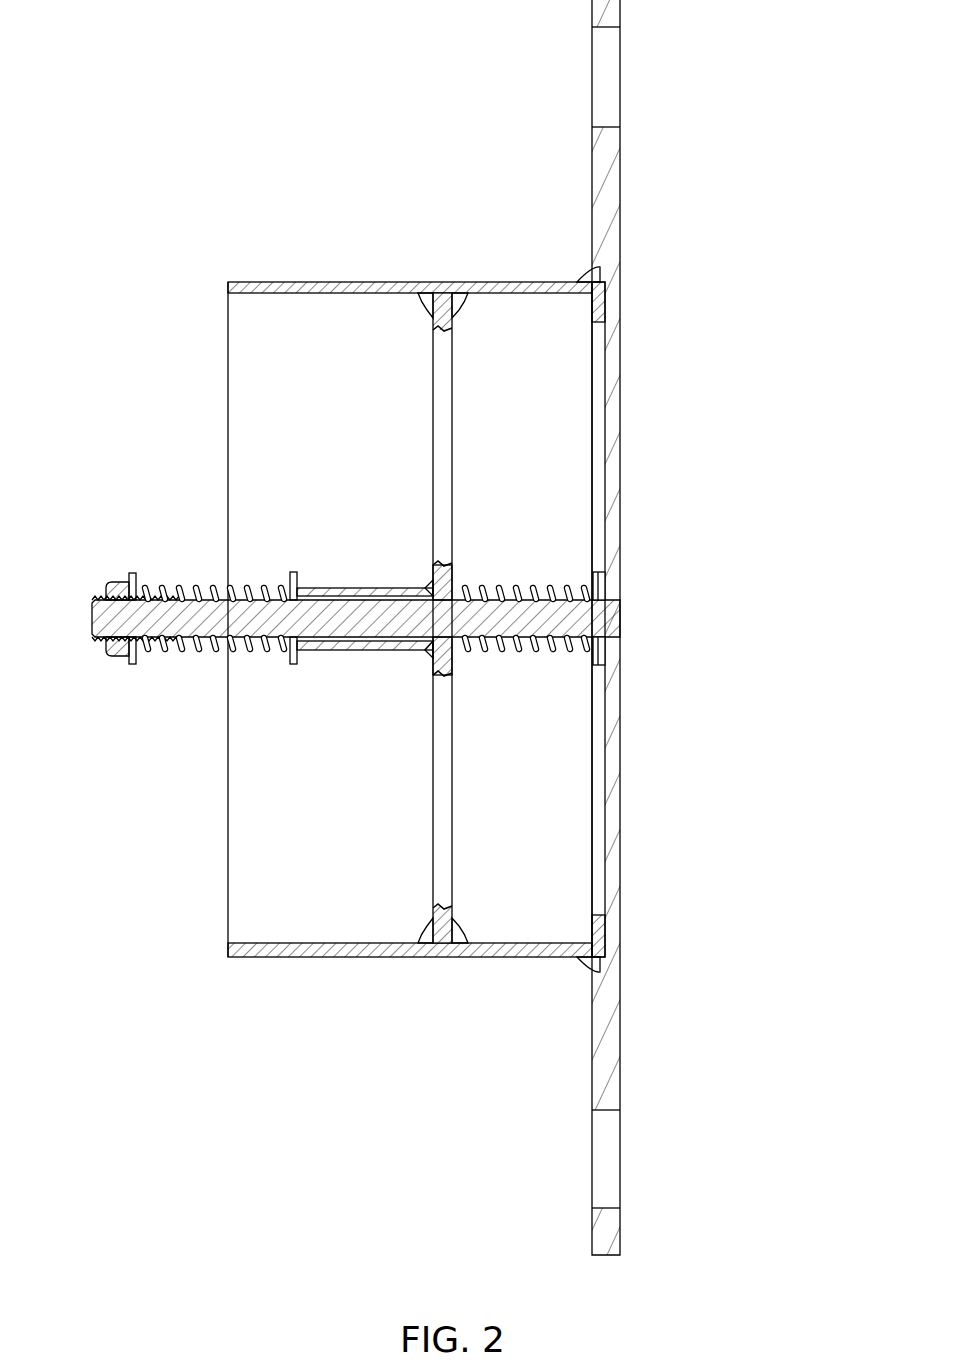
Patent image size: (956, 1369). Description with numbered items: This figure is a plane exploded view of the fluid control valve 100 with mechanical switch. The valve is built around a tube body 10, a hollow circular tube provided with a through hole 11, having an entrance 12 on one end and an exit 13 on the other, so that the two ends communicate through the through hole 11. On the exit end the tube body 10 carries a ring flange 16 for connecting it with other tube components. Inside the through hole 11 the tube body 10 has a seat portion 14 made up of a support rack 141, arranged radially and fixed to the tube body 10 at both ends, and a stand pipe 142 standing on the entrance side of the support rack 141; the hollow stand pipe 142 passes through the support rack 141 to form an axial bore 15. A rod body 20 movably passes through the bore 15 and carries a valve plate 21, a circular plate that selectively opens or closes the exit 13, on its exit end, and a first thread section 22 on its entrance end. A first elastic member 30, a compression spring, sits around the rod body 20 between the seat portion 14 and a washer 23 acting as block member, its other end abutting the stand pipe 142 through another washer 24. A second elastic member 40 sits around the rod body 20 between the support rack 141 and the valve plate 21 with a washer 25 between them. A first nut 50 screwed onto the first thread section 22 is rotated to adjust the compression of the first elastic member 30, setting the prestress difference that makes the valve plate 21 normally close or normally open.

The fluid control valve 100 is at (200, 129).
The tube body 10 is at (424, 582).
The through hole 11 is at (316, 310).
The entrance 12 is at (228, 383).
The exit 13 is at (597, 362).
The seat portion 14 is at (286, 618).
The support rack 141 is at (440, 773).
The stand pipe 142 is at (323, 643).
The bore 15 is at (382, 650).
The ring flange 16 is at (610, 1012).
The rod body 20 is at (343, 612).
The valve plate 21 is at (652, 627).
The first thread section 22 is at (102, 598).
The washer 23 is at (133, 574).
The washer 24 is at (293, 572).
The washer 25 is at (600, 648).
The first elastic member 30 is at (181, 656).
The second elastic member 40 is at (525, 648).
The first nut 50 is at (376, 586).